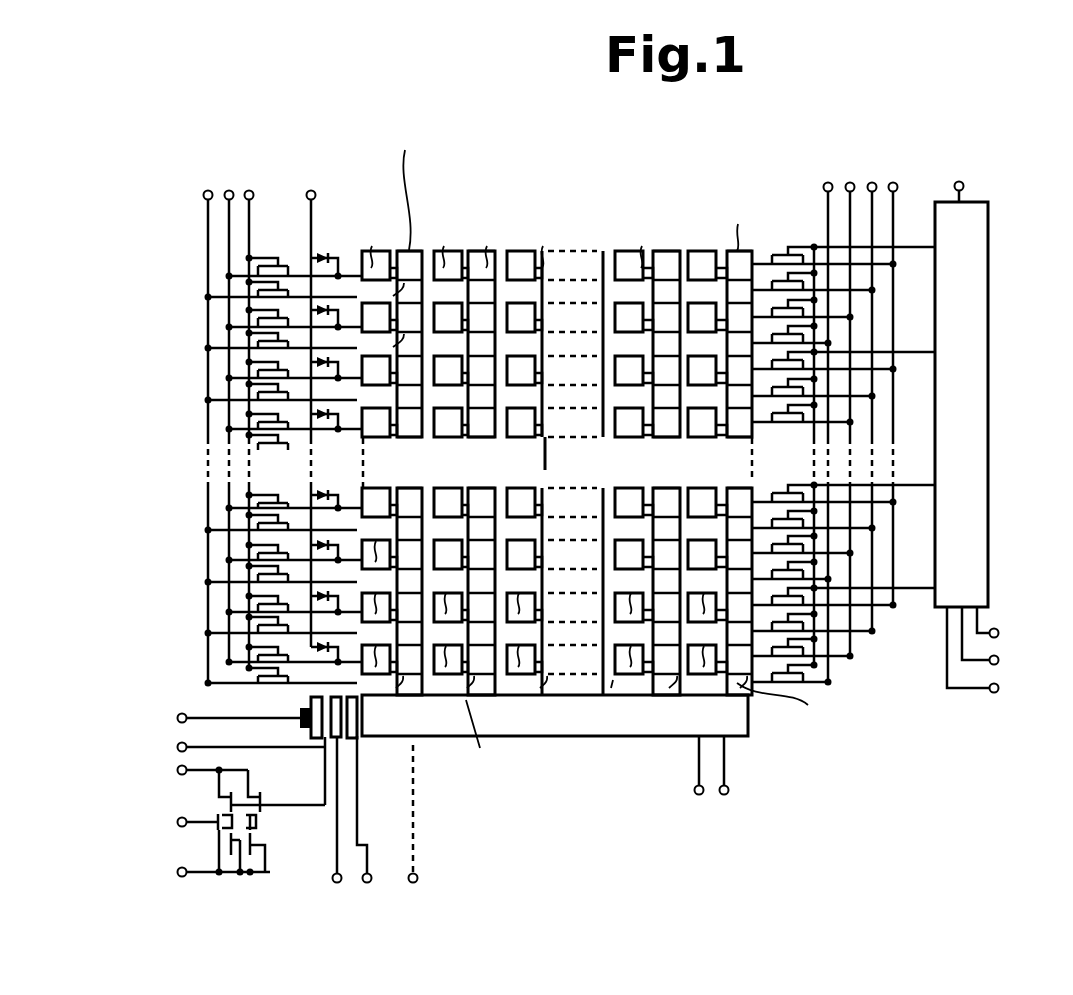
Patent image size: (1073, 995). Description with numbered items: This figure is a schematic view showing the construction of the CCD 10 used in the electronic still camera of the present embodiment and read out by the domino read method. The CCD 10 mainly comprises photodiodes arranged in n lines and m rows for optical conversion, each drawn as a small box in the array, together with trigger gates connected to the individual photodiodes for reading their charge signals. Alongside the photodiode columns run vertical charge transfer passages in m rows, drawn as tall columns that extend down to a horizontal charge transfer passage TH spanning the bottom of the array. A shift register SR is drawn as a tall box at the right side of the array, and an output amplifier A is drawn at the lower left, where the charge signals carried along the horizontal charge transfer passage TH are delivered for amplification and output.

The CCD 10 is at (572, 200).
The shift register SR is at (980, 378).
The horizontal charge transfer passage TH is at (733, 715).
The output amplifier A is at (213, 870).